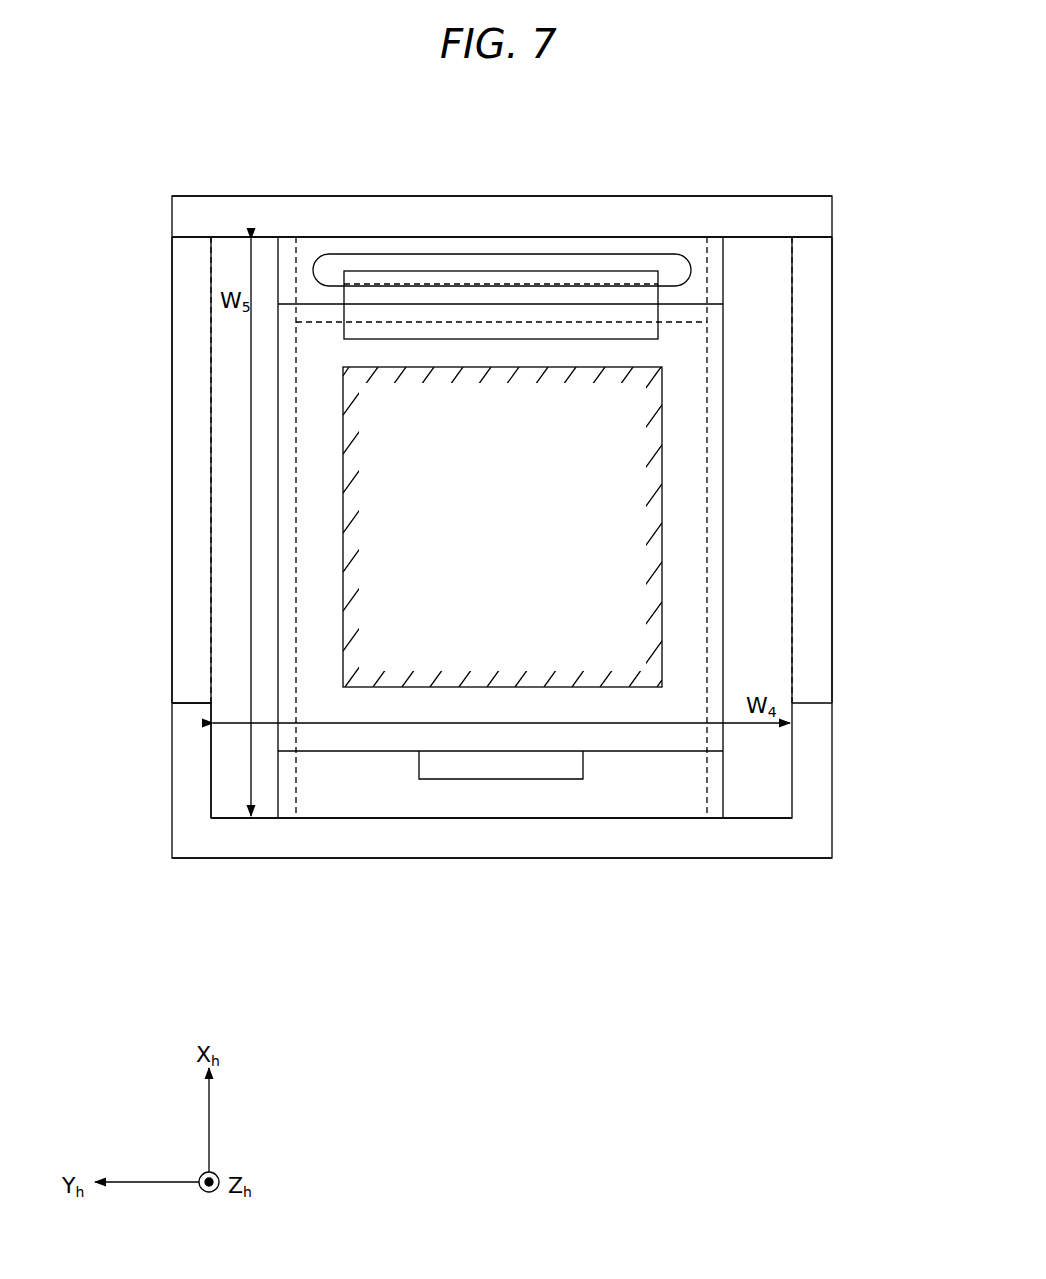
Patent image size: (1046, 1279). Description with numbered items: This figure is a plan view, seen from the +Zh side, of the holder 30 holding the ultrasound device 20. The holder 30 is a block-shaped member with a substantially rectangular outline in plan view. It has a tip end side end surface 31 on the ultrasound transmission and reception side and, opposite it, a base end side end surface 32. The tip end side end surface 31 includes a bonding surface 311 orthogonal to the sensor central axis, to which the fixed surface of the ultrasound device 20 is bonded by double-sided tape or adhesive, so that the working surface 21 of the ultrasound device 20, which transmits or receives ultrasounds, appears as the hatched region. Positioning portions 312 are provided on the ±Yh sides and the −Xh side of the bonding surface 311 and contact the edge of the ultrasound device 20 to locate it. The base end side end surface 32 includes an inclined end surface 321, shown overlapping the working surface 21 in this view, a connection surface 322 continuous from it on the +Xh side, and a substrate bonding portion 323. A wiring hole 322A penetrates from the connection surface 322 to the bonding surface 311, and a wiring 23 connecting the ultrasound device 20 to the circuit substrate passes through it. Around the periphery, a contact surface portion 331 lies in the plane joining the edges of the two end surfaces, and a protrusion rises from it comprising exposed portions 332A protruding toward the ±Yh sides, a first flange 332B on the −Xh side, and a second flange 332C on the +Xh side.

The ultrasound device 20 is at (693, 392).
The working surface 21 is at (618, 447).
The wiring 23 is at (584, 278).
The holder 30 is at (534, 196).
The tip end side end surface 31 is at (392, 820).
The base end side end surface 32 is at (500, 527).
The bonding surface 311 is at (620, 767).
The positioning portions 312 is at (230, 796).
The inclined end surface 321 is at (693, 348).
The connection surface 322 is at (697, 313).
The wiring hole 322A is at (668, 262).
The substrate bonding portion 323 is at (298, 258).
The contact surface portion 331 is at (211, 757).
The exposed portions 332A is at (172, 563).
The first flange 332B is at (480, 838).
The second flange 332C is at (437, 196).